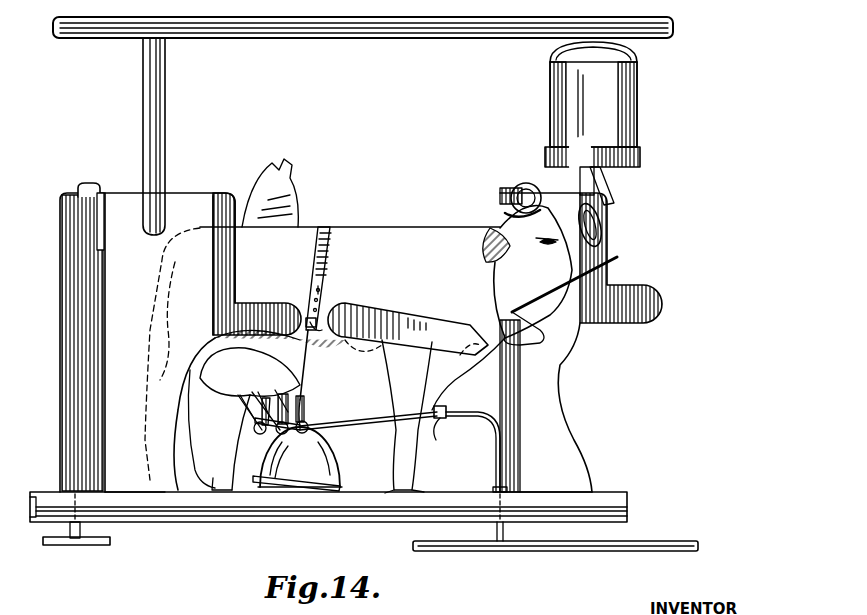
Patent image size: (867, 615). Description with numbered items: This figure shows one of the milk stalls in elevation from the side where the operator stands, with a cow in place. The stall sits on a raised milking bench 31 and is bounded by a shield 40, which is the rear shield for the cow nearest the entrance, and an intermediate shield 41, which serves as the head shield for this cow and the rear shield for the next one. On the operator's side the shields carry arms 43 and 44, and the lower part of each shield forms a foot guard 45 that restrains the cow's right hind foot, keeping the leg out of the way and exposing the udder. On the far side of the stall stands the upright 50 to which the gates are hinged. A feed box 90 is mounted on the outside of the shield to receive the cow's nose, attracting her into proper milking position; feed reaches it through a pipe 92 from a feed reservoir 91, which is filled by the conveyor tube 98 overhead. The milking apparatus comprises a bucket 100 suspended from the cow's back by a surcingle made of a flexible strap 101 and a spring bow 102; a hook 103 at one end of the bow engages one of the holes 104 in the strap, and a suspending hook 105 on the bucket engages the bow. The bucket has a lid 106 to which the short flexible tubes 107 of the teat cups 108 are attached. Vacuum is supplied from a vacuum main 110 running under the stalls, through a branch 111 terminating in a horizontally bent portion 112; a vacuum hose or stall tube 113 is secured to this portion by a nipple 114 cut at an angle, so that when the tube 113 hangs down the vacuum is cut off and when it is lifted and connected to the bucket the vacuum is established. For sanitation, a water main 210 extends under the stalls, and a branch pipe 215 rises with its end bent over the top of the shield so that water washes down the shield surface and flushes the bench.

The conveyor tube 98 is at (427, 21).
The feed reservoir 91 is at (637, 122).
The pipe 92 is at (614, 187).
The feed box 90 is at (621, 260).
The branch pipe 215 is at (100, 163).
The shield 40 is at (178, 198).
The intermediate shield 41 is at (565, 363).
The arm 43 is at (268, 318).
The arm 44 is at (443, 327).
The foot guard 45 is at (594, 478).
The upright 50 is at (276, 217).
The flexible strap 101 is at (328, 296).
The spring bow 102 is at (310, 353).
The hook 103 is at (331, 333).
The holes 104 is at (316, 290).
The suspending hook 105 is at (303, 395).
The lid 106 is at (260, 429).
The short flexible tubes 107 is at (250, 418).
The teat cups 108 is at (241, 416).
The bucket 100 is at (300, 457).
The milking bench 31 is at (332, 500).
The vacuum hose or stall tube 113 is at (350, 424).
The horizontally bent portion 112 is at (455, 400).
The nipple 114 is at (420, 437).
The branch 111 is at (494, 465).
The vacuum main 110 is at (553, 553).
The water main 210 is at (98, 548).